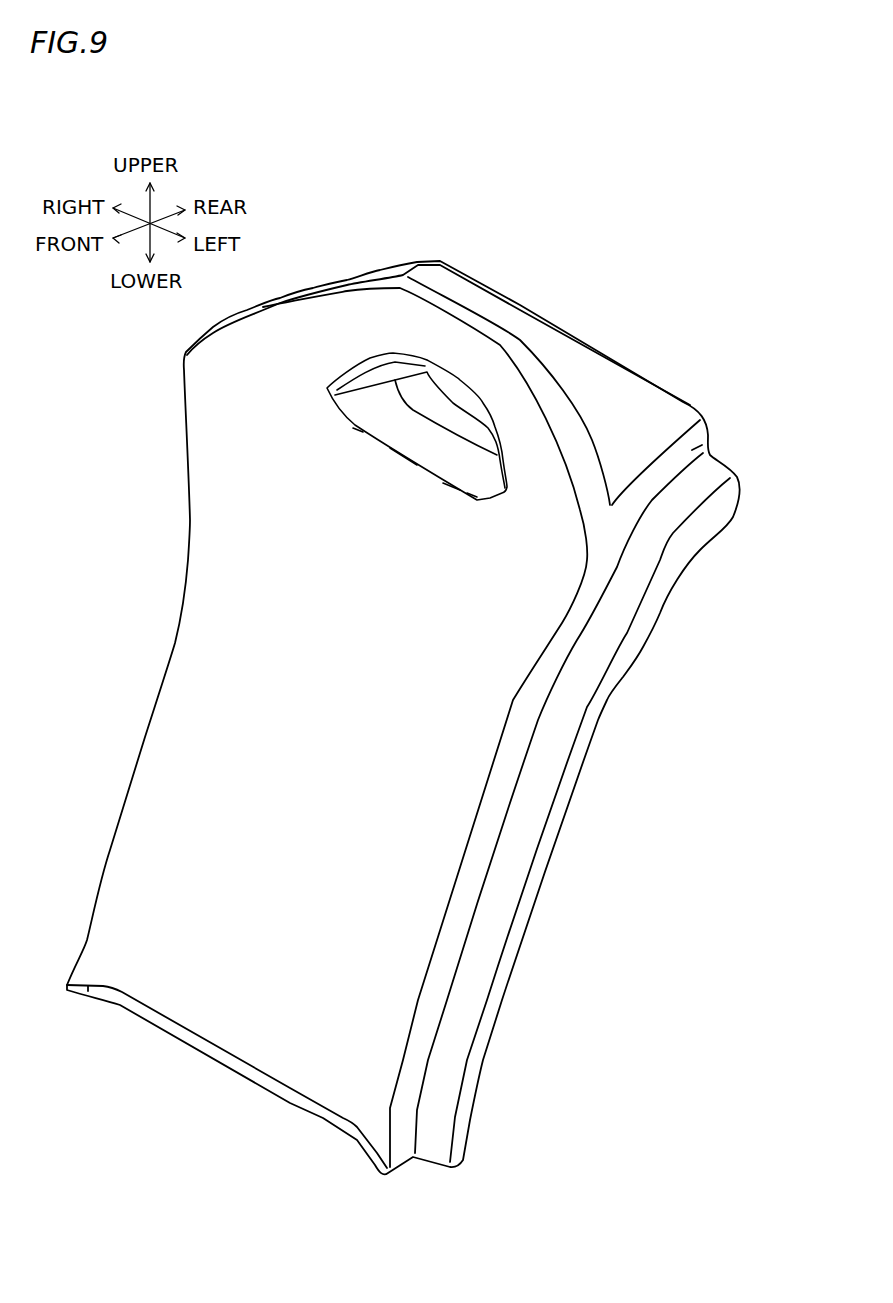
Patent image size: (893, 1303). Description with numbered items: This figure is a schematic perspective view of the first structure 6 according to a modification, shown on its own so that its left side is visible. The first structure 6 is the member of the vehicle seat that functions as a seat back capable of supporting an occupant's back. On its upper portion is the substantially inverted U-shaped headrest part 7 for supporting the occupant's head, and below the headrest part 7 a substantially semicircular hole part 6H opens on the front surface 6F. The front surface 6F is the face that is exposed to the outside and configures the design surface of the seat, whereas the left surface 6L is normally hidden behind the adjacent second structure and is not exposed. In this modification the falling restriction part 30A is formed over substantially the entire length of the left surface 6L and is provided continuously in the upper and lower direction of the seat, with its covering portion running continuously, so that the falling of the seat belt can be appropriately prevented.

The first structure 6 is at (542, 310).
The headrest part 7 is at (358, 333).
The front surface 6F is at (361, 694).
The hole part 6H is at (397, 428).
The left surface 6L is at (707, 440).
The falling restriction part 30A is at (637, 577).